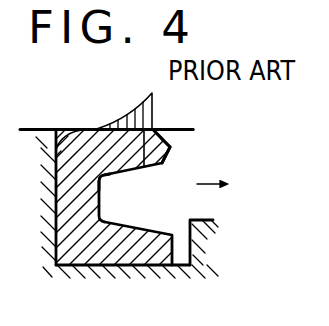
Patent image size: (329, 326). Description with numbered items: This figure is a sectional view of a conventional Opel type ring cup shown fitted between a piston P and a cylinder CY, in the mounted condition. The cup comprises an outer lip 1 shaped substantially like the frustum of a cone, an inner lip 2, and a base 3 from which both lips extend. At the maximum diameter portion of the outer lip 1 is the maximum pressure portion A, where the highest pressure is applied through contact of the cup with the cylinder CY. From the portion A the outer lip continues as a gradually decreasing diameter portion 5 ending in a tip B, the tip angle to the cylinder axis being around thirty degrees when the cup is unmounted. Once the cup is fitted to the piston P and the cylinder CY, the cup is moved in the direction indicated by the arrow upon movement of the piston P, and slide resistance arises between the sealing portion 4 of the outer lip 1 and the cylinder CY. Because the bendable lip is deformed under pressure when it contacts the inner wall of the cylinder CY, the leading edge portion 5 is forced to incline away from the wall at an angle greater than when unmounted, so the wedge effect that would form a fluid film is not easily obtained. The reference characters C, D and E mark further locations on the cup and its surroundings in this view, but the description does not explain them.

The outer lip 1 is at (122, 114).
The inner lip 2 is at (117, 254).
The base 3 is at (56, 188).
The sealing portion 4 is at (144, 167).
The gradually decreasing diameter portion 5 is at (187, 133).
The maximum pressure portion A is at (154, 128).
The tip B is at (171, 148).
The corner region C is at (58, 129).
The cylinder CY is at (76, 129).
The corner D is at (164, 165).
The recess E is at (100, 178).
The piston P is at (46, 223).